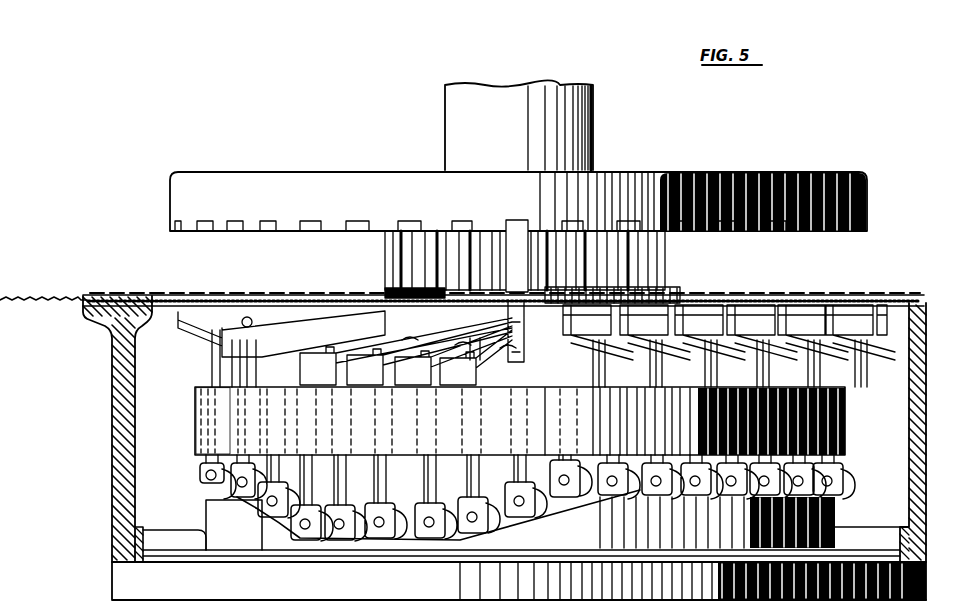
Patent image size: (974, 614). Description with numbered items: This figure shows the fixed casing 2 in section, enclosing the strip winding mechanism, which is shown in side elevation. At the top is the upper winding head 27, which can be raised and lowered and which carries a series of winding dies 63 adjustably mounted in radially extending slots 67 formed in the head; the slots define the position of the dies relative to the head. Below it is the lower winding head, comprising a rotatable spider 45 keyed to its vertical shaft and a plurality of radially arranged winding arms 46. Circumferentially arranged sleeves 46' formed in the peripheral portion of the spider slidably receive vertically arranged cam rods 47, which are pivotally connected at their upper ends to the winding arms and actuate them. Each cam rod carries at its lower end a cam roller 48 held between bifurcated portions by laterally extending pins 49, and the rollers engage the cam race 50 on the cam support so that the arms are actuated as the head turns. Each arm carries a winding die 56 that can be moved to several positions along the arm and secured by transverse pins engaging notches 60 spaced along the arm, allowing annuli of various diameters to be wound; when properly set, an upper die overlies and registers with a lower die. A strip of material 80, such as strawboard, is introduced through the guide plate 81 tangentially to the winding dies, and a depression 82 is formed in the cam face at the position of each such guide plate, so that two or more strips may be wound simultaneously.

The fixed casing 2 is at (114, 485).
The upper winding head 27 is at (672, 173).
The rotatable spider 45 is at (520, 421).
The winding arms 46 is at (534, 353).
The sleeves 46' is at (195, 421).
The cam rods 47 is at (232, 374).
The cam roller 48 is at (270, 520).
The pins 49 is at (342, 540).
The cam race 50 is at (216, 492).
The winding die 56 is at (384, 294).
The notches 60 is at (392, 335).
The winding dies 63 is at (386, 265).
The radially extending slots 67 is at (318, 232).
The strip of material 80 is at (66, 299).
The guide plate 81 is at (238, 296).
The depression 82 is at (300, 545).